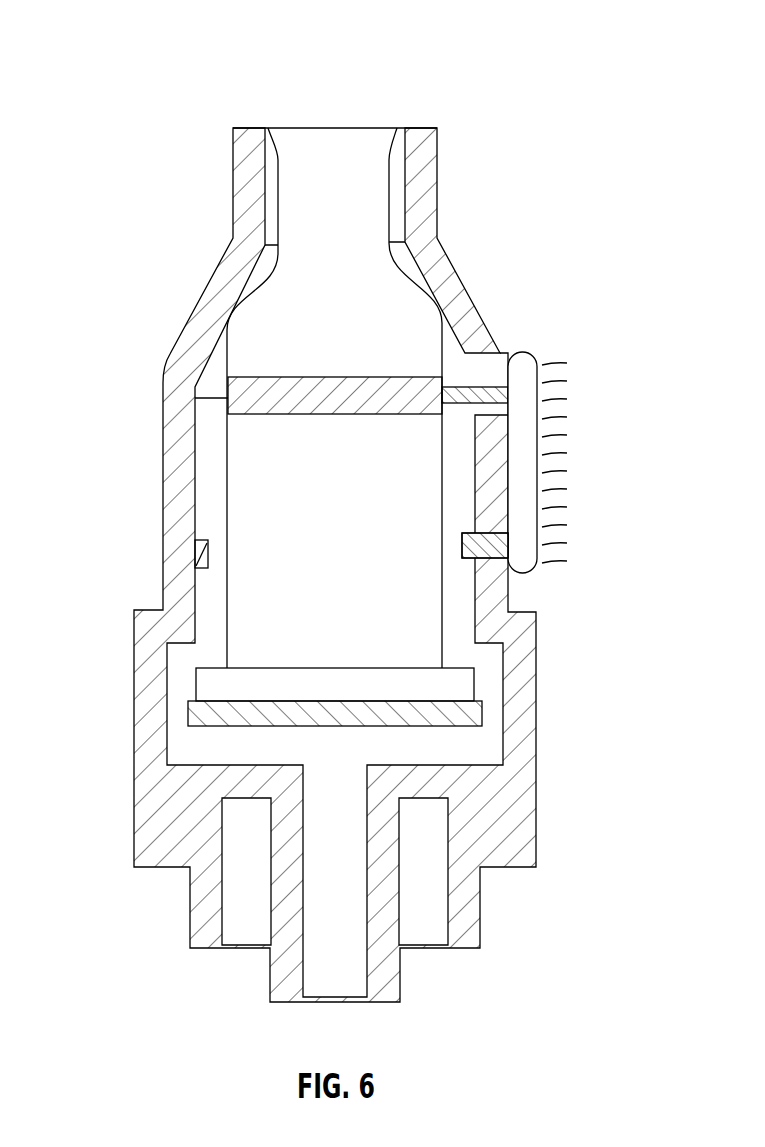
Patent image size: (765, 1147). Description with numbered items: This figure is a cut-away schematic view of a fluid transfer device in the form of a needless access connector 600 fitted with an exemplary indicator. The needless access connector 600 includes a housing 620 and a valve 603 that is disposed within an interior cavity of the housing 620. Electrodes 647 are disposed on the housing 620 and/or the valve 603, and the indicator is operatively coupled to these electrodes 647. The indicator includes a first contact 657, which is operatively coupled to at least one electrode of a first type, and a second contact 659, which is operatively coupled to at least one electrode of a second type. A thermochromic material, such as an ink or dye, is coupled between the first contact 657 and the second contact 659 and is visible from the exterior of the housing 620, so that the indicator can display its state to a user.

The needless access connector 600 is at (178, 53).
The housing 620 is at (437, 172).
The valve 603 is at (375, 272).
The electrodes 647 is at (255, 393).
The first contact 657 is at (507, 400).
The second contact 659 is at (508, 551).